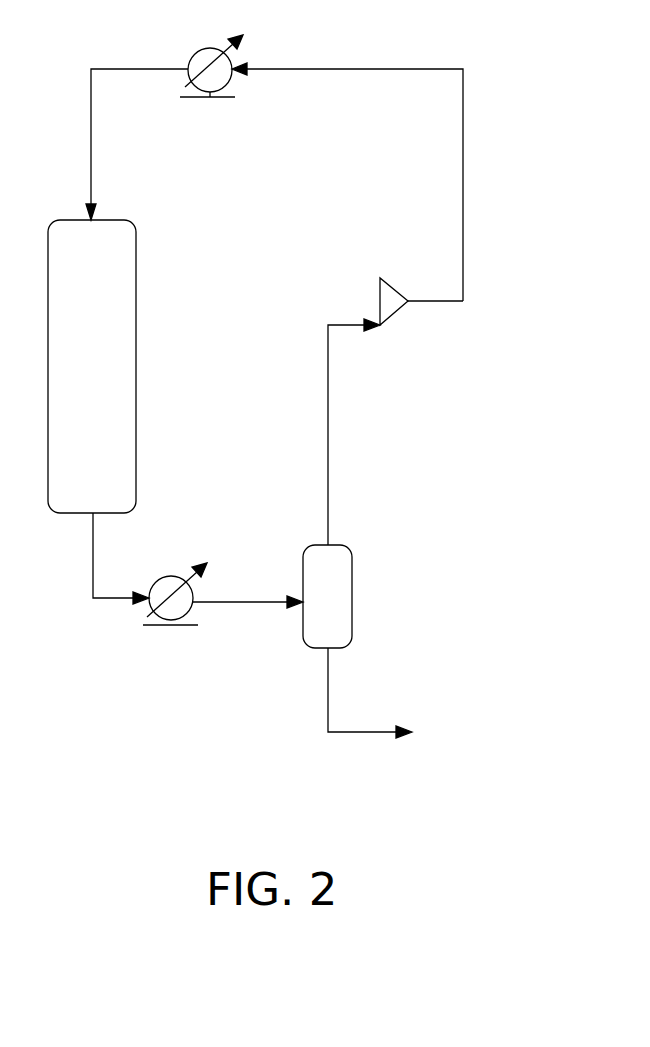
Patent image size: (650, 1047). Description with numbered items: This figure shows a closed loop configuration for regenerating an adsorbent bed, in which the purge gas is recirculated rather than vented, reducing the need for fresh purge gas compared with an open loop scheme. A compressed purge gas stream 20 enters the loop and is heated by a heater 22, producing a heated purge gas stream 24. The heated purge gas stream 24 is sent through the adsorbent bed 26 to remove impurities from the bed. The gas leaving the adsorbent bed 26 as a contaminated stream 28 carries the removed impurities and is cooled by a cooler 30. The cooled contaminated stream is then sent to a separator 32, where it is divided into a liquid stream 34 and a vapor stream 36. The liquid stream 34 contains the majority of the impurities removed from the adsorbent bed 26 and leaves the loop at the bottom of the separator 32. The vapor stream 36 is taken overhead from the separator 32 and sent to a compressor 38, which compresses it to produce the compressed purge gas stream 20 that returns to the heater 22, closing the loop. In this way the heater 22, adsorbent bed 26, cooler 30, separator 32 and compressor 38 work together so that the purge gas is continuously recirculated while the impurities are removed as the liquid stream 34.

The compressed purge gas stream 20 is at (472, 90).
The heater 22 is at (211, 97).
The heated purge gas stream 24 is at (86, 84).
The adsorbent bed 26 is at (92, 366).
The contaminated stream 28 is at (88, 560).
The cooler 30 is at (173, 574).
The separator 32 is at (303, 602).
The liquid stream 34 is at (370, 693).
The vapor stream 36 is at (322, 438).
The compressor 38 is at (397, 284).